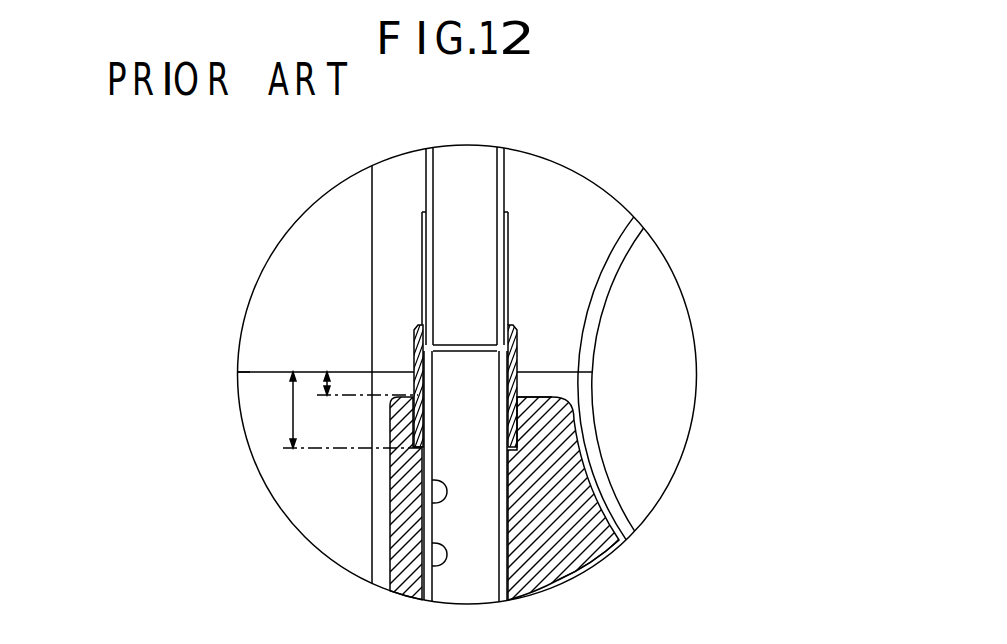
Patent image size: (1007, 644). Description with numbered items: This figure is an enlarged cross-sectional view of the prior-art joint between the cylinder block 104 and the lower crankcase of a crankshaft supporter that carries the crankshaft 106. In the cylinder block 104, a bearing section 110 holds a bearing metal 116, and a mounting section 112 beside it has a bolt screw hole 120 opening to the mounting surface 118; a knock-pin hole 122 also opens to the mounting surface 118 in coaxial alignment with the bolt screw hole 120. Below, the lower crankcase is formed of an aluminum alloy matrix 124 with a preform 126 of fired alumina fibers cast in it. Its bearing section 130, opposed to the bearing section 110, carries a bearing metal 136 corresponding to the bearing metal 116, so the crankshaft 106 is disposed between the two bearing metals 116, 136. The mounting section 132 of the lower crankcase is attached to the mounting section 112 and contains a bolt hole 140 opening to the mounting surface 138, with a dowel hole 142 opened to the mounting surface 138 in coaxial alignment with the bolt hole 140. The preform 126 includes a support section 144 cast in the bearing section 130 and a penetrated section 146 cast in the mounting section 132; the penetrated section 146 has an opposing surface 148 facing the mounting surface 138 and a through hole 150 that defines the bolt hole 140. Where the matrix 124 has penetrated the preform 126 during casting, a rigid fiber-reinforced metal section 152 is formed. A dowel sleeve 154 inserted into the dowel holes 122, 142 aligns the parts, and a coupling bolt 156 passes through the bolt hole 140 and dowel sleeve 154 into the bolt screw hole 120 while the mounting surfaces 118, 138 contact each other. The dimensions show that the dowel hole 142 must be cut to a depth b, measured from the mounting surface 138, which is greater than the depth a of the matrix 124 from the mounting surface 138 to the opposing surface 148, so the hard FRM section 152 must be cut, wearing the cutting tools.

The cylinder block 104 is at (596, 184).
The crankshaft 106 is at (663, 342).
The bearing section 110 is at (570, 252).
The mounting section 112 is at (393, 183).
The bearing metal 116 is at (618, 260).
The mounting surface 118 is at (250, 372).
The bolt screw hole 120 is at (428, 184).
The knock-pin hole 122 is at (513, 368).
The matrix 124 is at (397, 382).
The preform 126 is at (636, 532).
The bearing section 130 is at (593, 475).
The mounting section 132 is at (377, 552).
The bearing metal 136 is at (597, 442).
The mounting surface 138 is at (268, 375).
The bolt hole 140 is at (382, 580).
The dowel hole 142 is at (517, 379).
The support section 144 is at (560, 483).
The penetrated section 146 is at (397, 487).
The opposing surface 148 is at (513, 379).
The through hole 150 is at (397, 517).
The fiber-reinforced metal section 152 is at (616, 552).
The dowel sleeve 154 is at (413, 337).
The coupling bolt 156 is at (485, 192).
The depth of the matrix a is at (323, 380).
The depth for the dowel b is at (293, 418).